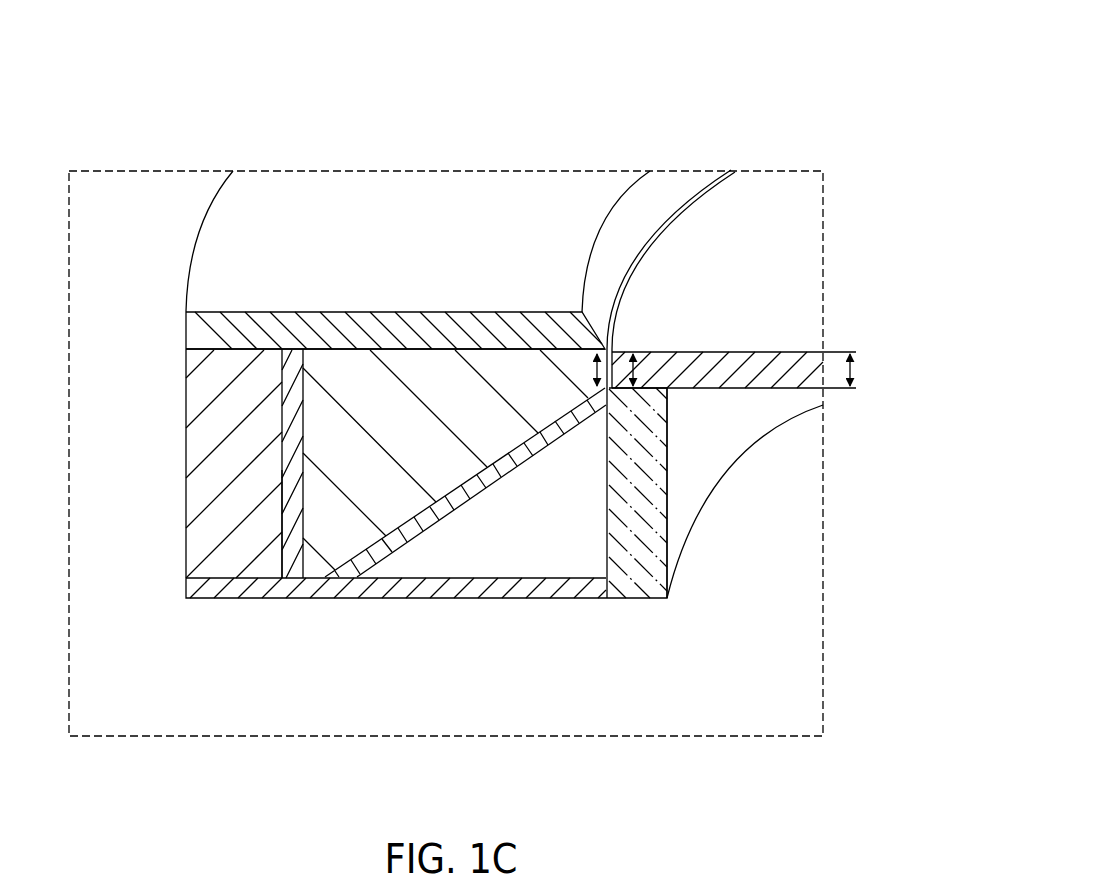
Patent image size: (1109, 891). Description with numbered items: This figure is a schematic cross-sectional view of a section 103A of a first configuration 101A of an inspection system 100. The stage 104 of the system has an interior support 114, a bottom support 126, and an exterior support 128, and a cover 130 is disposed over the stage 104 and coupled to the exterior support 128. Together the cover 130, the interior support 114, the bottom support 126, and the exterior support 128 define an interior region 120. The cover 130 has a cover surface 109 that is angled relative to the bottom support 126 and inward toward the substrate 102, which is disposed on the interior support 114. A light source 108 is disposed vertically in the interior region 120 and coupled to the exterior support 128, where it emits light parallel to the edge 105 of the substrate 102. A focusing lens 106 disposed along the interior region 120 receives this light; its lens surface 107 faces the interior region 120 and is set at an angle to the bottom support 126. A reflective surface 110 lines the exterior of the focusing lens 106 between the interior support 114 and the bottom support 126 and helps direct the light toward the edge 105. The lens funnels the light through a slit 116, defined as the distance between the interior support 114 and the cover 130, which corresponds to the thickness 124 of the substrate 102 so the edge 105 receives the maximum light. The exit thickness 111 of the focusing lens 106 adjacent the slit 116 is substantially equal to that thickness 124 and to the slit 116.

The inspection system 100 is at (683, 90).
The first configuration 101A is at (852, 122).
The section 103A is at (823, 217).
The substrate 102 is at (760, 351).
The stage 104 is at (168, 388).
The edge 105 is at (606, 378).
The focusing lens 106 is at (490, 347).
The lens surface 107 is at (457, 497).
The light source 108 is at (282, 528).
The cover surface 109 is at (635, 213).
The reflective surface 110 is at (493, 472).
The exit thickness 111 is at (594, 370).
The interior support 114 is at (655, 390).
The slit 116 is at (640, 365).
The interior region 120 is at (214, 462).
The thickness 124 is at (856, 370).
The bottom support 126 is at (515, 600).
The exterior support 128 is at (186, 512).
The cover 130 is at (186, 326).